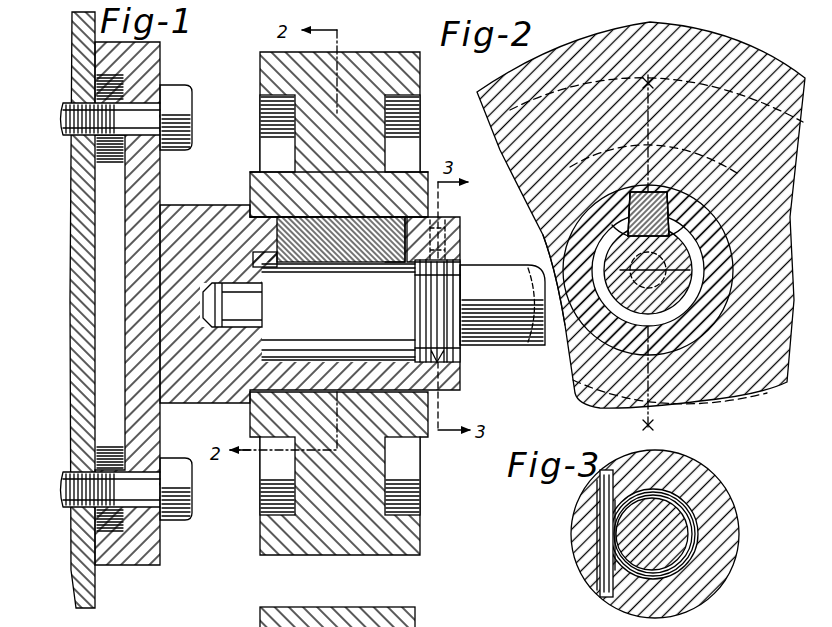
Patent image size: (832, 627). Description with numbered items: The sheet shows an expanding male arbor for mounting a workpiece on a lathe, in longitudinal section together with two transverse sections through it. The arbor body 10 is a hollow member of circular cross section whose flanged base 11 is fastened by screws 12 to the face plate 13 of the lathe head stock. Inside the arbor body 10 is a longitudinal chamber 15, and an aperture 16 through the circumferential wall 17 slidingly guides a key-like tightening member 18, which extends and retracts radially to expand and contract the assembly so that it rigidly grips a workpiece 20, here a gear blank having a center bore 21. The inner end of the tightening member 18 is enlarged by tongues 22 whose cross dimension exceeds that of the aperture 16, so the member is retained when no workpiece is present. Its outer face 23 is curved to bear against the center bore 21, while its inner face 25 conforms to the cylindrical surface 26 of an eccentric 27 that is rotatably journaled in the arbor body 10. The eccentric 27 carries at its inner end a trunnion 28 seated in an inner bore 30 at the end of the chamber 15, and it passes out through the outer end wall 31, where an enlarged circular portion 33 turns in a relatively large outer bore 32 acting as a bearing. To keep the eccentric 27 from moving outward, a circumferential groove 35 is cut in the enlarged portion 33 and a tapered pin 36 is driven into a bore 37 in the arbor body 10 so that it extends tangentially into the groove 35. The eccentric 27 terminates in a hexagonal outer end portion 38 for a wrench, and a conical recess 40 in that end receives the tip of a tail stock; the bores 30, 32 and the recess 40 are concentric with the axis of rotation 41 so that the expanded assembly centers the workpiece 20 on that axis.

In FIG. 1, the arbor body 10 is at (352, 306).
In FIG. 3, the arbor body 10 is at (661, 529).
In FIG. 1, the flanged base 11 is at (160, 60).
In FIG. 1, the screws 12 is at (185, 97).
In FIG. 1, the face plate 13 is at (95, 588).
In FIG. 1, the longitudinal chamber 15 is at (297, 348).
In FIG. 1, the aperture 16 is at (250, 206).
In FIG. 2, the aperture 16 is at (640, 193).
In FIG. 1, the circumferential wall 17 is at (425, 212).
In FIG. 2, the circumferential wall 17 is at (567, 238).
In FIG. 1, the tightening member 18 is at (396, 218).
In FIG. 2, the tightening member 18 is at (631, 252).
In FIG. 1, the workpiece 20 is at (354, 303).
In FIG. 2, the workpiece 20 is at (748, 53).
In FIG. 1, the center bore 21 is at (312, 222).
In FIG. 2, the center bore 21 is at (716, 305).
In FIG. 2, the tongues 22 is at (606, 208).
In FIG. 2, the outer face 23 is at (650, 190).
In FIG. 1, the inner face 25 is at (378, 265).
In FIG. 2, the inner face 25 is at (682, 237).
In FIG. 1, the cylindrical surface 26 is at (312, 262).
In FIG. 2, the cylindrical surface 26 is at (683, 198).
In FIG. 1, the eccentric 27 is at (374, 308).
In FIG. 2, the eccentric 27 is at (692, 291).
In FIG. 3, the eccentric 27 is at (688, 514).
In FIG. 1, the trunnion 28 is at (262, 312).
In FIG. 1, the inner bore 30 is at (232, 305).
In FIG. 1, the outer end wall 31 is at (462, 262).
In FIG. 3, the outer bore 32 is at (678, 466).
In FIG. 1, the enlarged circular portion 33 is at (461, 350).
In FIG. 3, the enlarged circular portion 33 is at (690, 553).
In FIG. 1, the circumferential groove 35 is at (437, 300).
In FIG. 3, the circumferential groove 35 is at (697, 526).
In FIG. 1, the tapered pin 36 is at (462, 240).
In FIG. 3, the tapered pin 36 is at (600, 493).
In FIG. 1, the bore 37 is at (448, 222).
In FIG. 3, the bore 37 is at (597, 510).
In FIG. 1, the outer end portion 38 is at (506, 346).
In FIG. 1, the conical recess 40 is at (526, 284).
In FIG. 2, the axis of rotation 41 is at (660, 271).